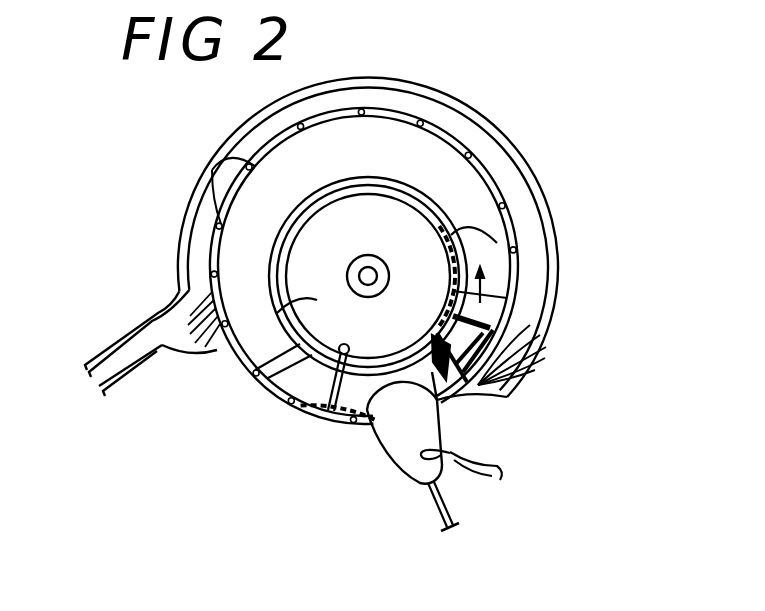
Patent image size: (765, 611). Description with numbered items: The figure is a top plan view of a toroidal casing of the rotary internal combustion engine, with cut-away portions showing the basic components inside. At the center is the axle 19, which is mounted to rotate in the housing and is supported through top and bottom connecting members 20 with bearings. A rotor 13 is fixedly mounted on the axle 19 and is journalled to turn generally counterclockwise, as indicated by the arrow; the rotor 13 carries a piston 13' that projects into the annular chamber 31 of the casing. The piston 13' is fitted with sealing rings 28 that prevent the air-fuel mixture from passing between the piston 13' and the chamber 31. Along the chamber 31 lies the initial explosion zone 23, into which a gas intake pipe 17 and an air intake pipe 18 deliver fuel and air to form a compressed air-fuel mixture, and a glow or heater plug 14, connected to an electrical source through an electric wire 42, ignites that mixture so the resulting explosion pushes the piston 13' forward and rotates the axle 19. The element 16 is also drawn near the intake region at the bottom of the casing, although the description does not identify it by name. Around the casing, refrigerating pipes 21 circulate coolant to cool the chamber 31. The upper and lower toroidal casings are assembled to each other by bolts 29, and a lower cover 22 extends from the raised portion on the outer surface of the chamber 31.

The rotor 13 is at (519, 304).
The piston 13' is at (548, 355).
The glow or heater plug 14 is at (442, 437).
The discharge chute 16 is at (400, 440).
The gas intake pipe 17 is at (437, 509).
The air intake pipe 18 is at (455, 507).
The axle 19 is at (373, 273).
The connecting members 20 is at (389, 276).
The refrigerating pipes 21 is at (157, 312).
The lower cover 22 is at (317, 302).
The initial explosion zone 23 is at (353, 390).
The sealing rings 28 is at (495, 396).
The bolts 29 is at (212, 170).
The chamber 31 is at (513, 253).
The electric wire 42 is at (500, 462).